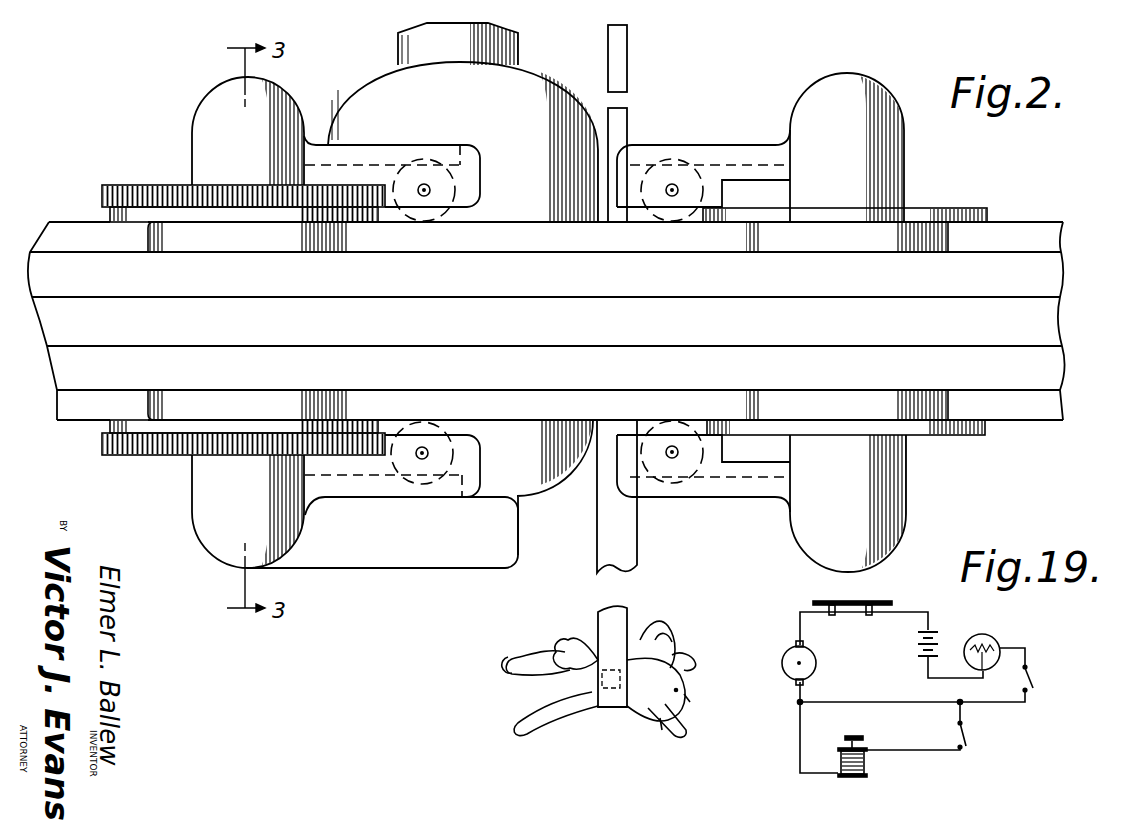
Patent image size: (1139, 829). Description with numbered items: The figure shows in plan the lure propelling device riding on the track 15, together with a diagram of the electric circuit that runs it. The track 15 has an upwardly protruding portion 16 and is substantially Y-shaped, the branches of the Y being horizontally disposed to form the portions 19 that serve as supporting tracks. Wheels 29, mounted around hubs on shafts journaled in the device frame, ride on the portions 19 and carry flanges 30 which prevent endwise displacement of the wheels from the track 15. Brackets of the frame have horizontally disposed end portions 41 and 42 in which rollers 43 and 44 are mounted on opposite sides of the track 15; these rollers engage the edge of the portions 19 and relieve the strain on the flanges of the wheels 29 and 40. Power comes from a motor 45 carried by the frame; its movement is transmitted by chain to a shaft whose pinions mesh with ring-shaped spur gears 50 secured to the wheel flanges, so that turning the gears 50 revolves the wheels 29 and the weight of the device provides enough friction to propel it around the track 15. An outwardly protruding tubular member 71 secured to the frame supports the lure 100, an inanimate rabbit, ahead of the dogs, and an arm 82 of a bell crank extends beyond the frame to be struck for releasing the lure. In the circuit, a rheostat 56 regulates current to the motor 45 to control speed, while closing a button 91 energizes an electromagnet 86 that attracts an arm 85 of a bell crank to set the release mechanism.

In FIG. 2, the track 15 is at (1020, 272).
In FIG. 2, the upwardly protruding portion 16 is at (1050, 328).
In FIG. 2, the horizontally disposed portions 19 is at (1062, 248).
In FIG. 2, the wheels 29 is at (208, 245).
In FIG. 2, the flanges 30 is at (128, 217).
In FIG. 2, the wheels 40 is at (970, 209).
In FIG. 2, the horizontally disposed end portion 41 is at (695, 156).
In FIG. 2, the horizontally disposed end portion 42 is at (470, 157).
In FIG. 2, the roller 43 is at (670, 222).
In FIG. 2, the roller 44 is at (437, 212).
In FIG. 2, the motor 45 is at (522, 80).
In FIG. 19, the motor 45 is at (817, 665).
In FIG. 2, the ring-shaped spur gears 50 is at (135, 185).
In FIG. 19, the rheostat 56 is at (996, 642).
In FIG. 2, the tubular member 71 is at (628, 614).
In FIG. 2, the arm 82 is at (628, 88).
In FIG. 19, the arm 85 is at (858, 735).
In FIG. 19, the electromagnet 86 is at (865, 762).
In FIG. 19, the button 91 is at (970, 735).
In FIG. 2, the lure 100 is at (686, 696).